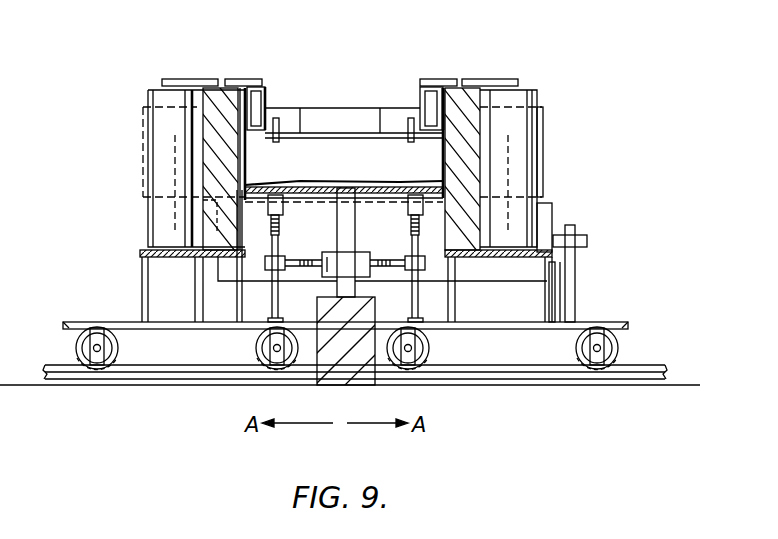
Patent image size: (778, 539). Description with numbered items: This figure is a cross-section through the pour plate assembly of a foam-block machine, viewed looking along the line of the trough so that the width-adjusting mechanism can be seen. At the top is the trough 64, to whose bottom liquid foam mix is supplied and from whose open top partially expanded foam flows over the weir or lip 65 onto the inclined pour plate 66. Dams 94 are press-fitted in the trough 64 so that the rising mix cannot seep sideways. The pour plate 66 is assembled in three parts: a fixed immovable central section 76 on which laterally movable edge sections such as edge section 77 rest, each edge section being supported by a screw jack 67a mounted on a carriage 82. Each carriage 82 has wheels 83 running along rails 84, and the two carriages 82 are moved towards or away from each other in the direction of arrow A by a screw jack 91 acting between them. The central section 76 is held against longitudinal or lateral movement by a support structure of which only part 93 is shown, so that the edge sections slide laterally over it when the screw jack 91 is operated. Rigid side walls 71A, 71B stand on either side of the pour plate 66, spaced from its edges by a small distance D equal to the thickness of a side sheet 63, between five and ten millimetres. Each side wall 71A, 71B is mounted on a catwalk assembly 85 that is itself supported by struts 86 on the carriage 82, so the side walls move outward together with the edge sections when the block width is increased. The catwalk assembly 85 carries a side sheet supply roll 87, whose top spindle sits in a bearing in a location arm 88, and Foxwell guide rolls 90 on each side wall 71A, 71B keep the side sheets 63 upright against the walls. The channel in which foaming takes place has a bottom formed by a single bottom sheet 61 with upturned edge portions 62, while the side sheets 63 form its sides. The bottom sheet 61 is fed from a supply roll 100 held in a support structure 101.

The bottom sheet 61 is at (330, 185).
The upturned edge portions 62 is at (437, 185).
The side sheets 63 is at (247, 140).
The trough 64 is at (345, 108).
The weir or lip 65 is at (380, 133).
The pour plate 66 is at (350, 148).
The screw jack 67a is at (412, 210).
The rigid side wall 71A is at (222, 115).
The rigid side wall 71B is at (462, 115).
The central section 76 is at (322, 195).
The pour plate edge section 77 is at (270, 196).
The carriage 82 is at (490, 329).
The wheels 83 is at (618, 348).
The rails 84 is at (655, 368).
The catwalk assembly 85 is at (556, 248).
The struts 86 is at (455, 300).
The side sheet supply roll 87 is at (510, 95).
The location arm 88 is at (512, 79).
The Foxwell guide roll 90 is at (263, 105).
The screw jack 91 is at (325, 280).
The support structure part 93 is at (350, 372).
The dam 94 is at (280, 120).
The supply roll 100 is at (548, 212).
The support structure 101 is at (572, 296).
The distance D is at (245, 183).